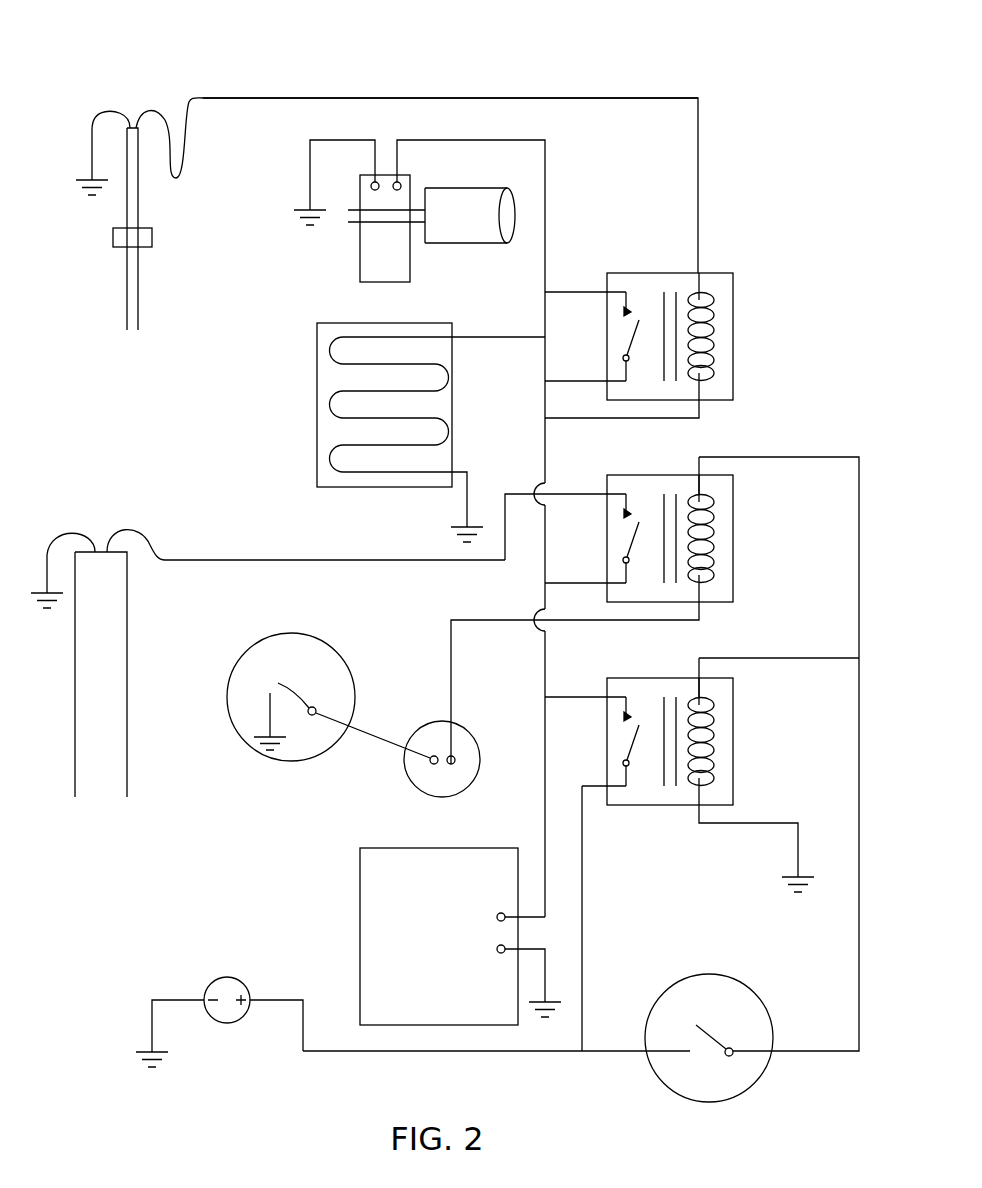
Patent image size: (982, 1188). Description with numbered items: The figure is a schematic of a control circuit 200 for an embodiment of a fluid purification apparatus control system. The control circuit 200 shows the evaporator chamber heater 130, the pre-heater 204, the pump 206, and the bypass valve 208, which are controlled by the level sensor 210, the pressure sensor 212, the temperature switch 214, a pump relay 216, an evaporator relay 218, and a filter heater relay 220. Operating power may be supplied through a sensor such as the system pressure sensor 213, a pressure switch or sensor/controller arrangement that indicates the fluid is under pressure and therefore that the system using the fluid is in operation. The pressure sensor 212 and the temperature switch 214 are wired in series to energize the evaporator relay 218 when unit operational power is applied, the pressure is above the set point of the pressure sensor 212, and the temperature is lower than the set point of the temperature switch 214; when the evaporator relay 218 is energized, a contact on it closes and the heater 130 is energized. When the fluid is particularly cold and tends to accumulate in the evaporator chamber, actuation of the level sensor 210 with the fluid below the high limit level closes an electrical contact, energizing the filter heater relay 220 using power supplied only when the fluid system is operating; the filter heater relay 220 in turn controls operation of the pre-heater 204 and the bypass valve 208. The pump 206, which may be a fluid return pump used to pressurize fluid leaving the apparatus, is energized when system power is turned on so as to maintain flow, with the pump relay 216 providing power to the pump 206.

The control circuit 200 is at (722, 72).
The evaporator chamber heater 130 is at (75, 656).
The pre-heater 204 is at (317, 398).
The pump 206 is at (412, 939).
The bypass valve 208 is at (453, 245).
The level sensor 210 is at (127, 291).
The pressure sensor 212 is at (316, 633).
The system pressure sensor 213 is at (735, 974).
The temperature switch 214 is at (460, 795).
The pump relay 216 is at (734, 698).
The evaporator relay 218 is at (607, 480).
The filter heater relay 220 is at (622, 273).